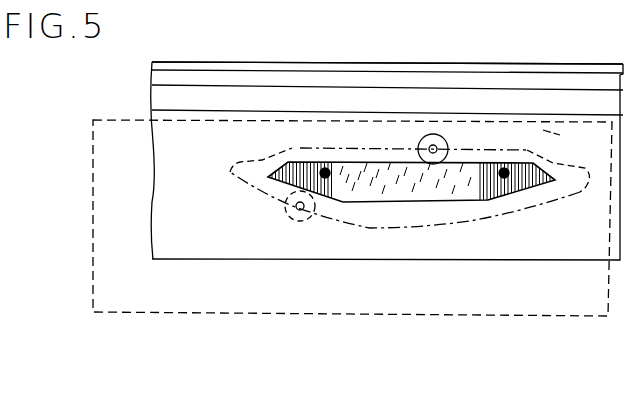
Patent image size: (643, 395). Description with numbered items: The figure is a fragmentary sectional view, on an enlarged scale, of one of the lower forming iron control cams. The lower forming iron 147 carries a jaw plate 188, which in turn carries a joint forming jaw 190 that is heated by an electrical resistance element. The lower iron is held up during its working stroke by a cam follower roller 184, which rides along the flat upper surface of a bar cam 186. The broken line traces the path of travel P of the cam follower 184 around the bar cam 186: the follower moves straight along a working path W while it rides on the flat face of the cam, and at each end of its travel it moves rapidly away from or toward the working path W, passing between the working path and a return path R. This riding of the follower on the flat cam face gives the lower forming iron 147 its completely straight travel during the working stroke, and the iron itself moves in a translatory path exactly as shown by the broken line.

The lower forming iron 147 is at (474, 250).
The cam follower roller 184 is at (426, 133).
The bar cam 186 is at (460, 173).
The jaw plate 188 is at (153, 79).
The joint forming jaw 190 is at (470, 50).
The working path W is at (295, 147).
The path of travel P is at (230, 172).
The return path R is at (373, 225).